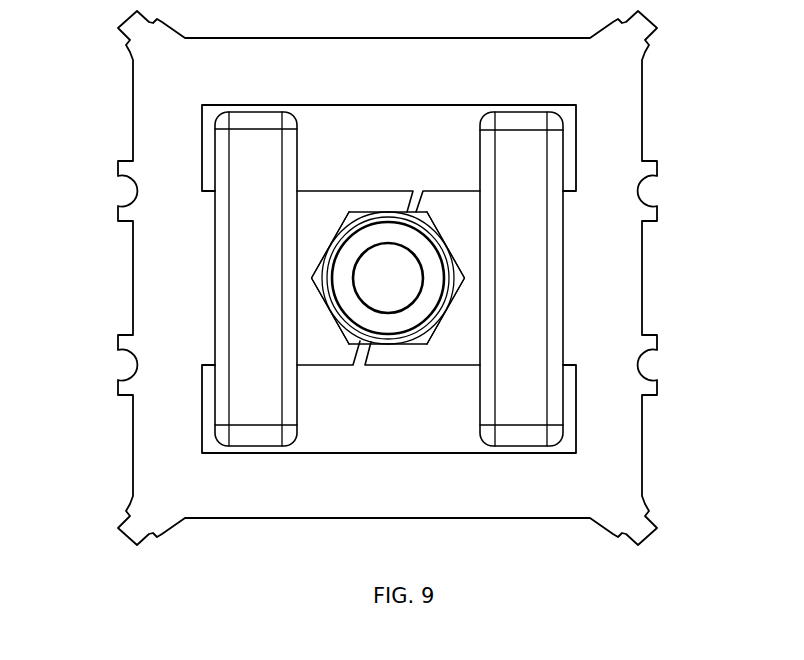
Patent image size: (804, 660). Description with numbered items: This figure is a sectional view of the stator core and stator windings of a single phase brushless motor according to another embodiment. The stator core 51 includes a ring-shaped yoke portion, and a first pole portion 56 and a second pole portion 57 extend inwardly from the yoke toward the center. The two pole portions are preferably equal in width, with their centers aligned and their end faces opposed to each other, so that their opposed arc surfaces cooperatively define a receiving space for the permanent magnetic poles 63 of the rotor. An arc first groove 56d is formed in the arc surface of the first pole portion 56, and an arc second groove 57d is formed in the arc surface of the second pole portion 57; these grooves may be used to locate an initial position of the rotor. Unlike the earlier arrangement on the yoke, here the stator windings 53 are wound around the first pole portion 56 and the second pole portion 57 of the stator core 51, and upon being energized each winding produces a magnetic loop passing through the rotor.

The stator core 51 is at (598, 213).
The stator winding 53 is at (525, 255).
The first pole portion 56 is at (462, 340).
The first groove 56d is at (463, 278).
The second pole portion 57 is at (320, 341).
The second groove 57d is at (312, 278).
The permanent magnetic poles 63 is at (345, 256).